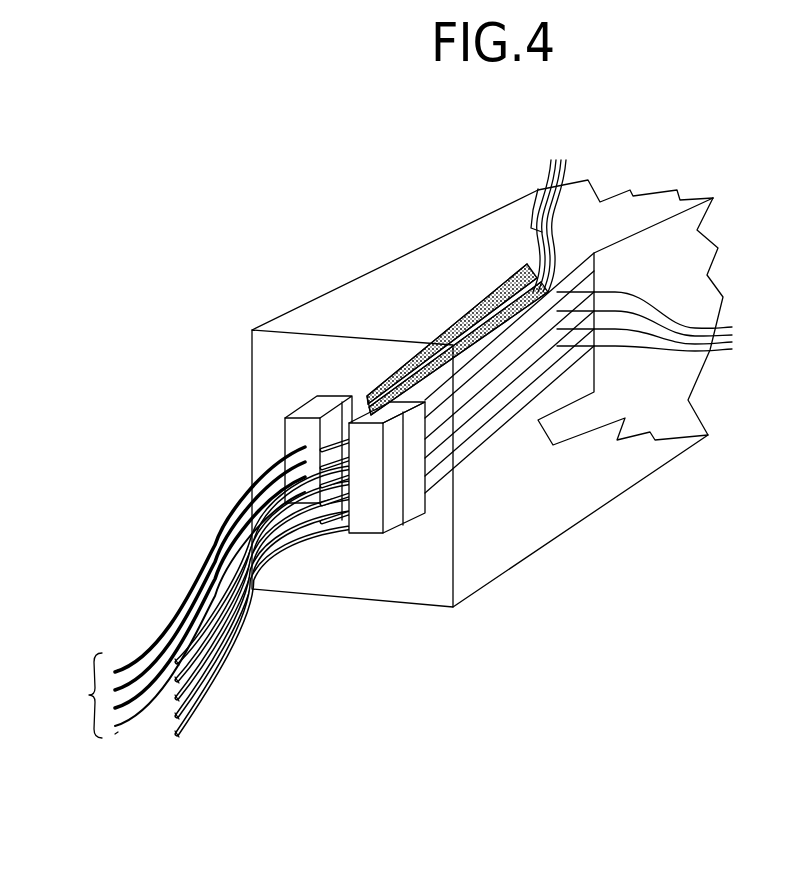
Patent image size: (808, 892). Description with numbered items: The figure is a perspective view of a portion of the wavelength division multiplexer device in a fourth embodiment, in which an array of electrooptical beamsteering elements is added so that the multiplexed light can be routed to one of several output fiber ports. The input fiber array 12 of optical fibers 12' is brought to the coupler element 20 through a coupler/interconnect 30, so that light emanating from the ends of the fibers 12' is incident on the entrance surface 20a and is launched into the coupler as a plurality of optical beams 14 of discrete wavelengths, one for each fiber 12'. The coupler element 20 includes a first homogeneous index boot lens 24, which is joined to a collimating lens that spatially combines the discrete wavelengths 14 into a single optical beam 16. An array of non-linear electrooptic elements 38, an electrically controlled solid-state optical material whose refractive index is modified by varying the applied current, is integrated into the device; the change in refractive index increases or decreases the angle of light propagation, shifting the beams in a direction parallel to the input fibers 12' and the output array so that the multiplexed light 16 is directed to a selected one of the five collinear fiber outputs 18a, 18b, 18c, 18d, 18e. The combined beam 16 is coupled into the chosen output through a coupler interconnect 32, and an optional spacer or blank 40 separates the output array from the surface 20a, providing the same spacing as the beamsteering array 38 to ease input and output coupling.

The coupler element 20 is at (313, 255).
The entrance surface 20a is at (267, 428).
The first homogeneous index boot lens 24 is at (432, 293).
The discrete wavelengths of light 14 is at (475, 272).
The single optical beam 16 is at (594, 373).
The coupler/interconnect 30 is at (295, 413).
The array of electrooptic elements 38 is at (337, 403).
The coupler interconnect 32 is at (375, 518).
The spacer or blank 40 is at (413, 492).
The input fiber array 12 is at (89, 695).
The optical fibers 12' is at (210, 586).
The fiber output 18a is at (188, 737).
The fiber output 18b is at (212, 695).
The fiber output 18c is at (240, 672).
The fiber output 18d is at (257, 648).
The fiber output 18e is at (262, 615).